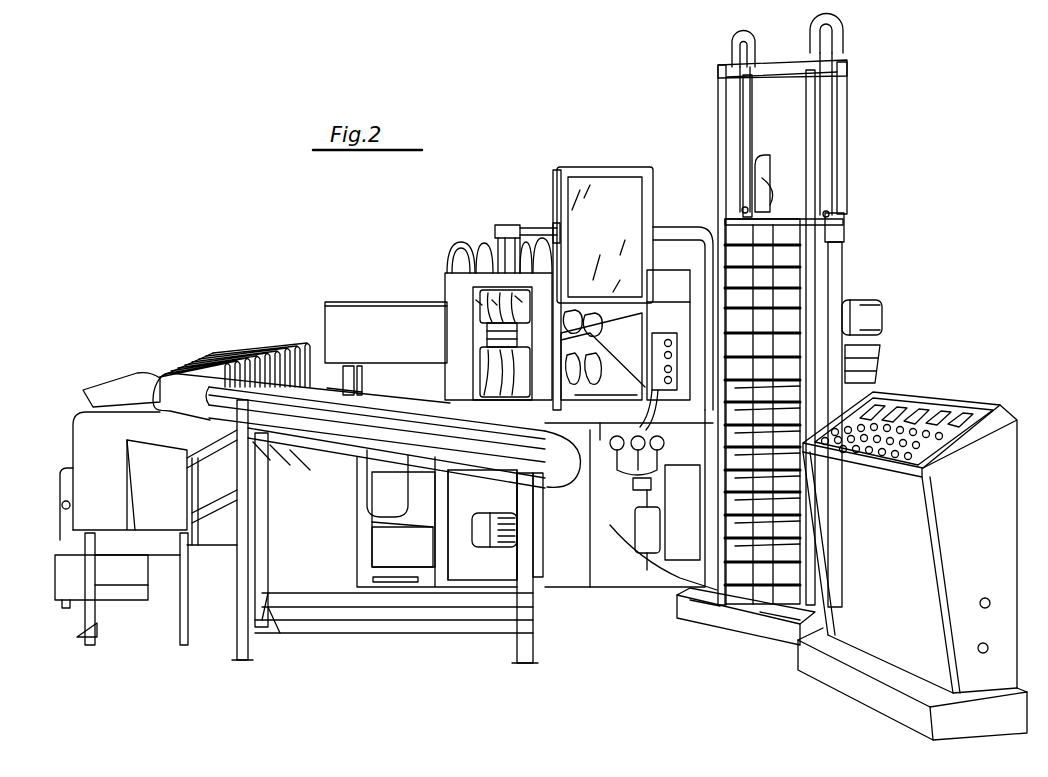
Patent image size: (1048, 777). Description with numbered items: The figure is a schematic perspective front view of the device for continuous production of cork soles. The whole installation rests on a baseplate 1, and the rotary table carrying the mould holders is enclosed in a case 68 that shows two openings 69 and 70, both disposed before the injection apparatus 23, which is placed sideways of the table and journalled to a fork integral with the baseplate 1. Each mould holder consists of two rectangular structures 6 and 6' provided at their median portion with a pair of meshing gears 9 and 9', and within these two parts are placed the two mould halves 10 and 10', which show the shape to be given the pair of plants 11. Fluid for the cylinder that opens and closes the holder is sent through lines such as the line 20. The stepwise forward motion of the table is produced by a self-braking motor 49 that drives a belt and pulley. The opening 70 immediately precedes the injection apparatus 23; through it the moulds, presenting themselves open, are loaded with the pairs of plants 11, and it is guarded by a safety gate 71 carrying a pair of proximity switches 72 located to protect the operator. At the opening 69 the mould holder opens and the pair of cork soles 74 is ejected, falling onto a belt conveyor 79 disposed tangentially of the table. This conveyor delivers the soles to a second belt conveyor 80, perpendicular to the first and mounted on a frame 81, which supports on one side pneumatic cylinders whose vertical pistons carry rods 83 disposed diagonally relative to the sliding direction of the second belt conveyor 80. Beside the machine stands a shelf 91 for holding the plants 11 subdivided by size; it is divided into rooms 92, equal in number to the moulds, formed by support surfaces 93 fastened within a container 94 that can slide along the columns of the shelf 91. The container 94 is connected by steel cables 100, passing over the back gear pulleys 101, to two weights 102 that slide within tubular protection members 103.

The baseplate 1 is at (467, 553).
The rectangular structure of the mould holder 6 is at (469, 360).
The rectangular structure of the mould holder 6' is at (470, 315).
The gear 9 is at (481, 245).
The gear 9' is at (457, 250).
The mould half 10 is at (380, 368).
The mould half 10' is at (506, 234).
The pair of plants 11 is at (575, 340).
The line 20 is at (532, 225).
The injection apparatus 23 is at (855, 320).
The self-breaking motor 49 is at (387, 497).
The case 68 is at (365, 323).
The opening 69 is at (460, 300).
The opening 70 is at (634, 313).
The safety gate 71 is at (607, 187).
The proximity switches 72 is at (565, 407).
The pair of cork soles 74 is at (495, 405).
The belt conveyor 79 is at (330, 393).
The second belt conveyor 80 is at (122, 390).
The frame 81 is at (200, 487).
The rods 83 is at (221, 362).
The shelf 91 is at (748, 615).
The rooms 92 is at (785, 278).
The support surfaces 93 is at (800, 353).
The container 94 is at (755, 208).
The steel cables 100 is at (752, 98).
The back gear pulleys 101 is at (840, 30).
The weights 102 is at (845, 222).
The tubular protection members 103 is at (830, 297).